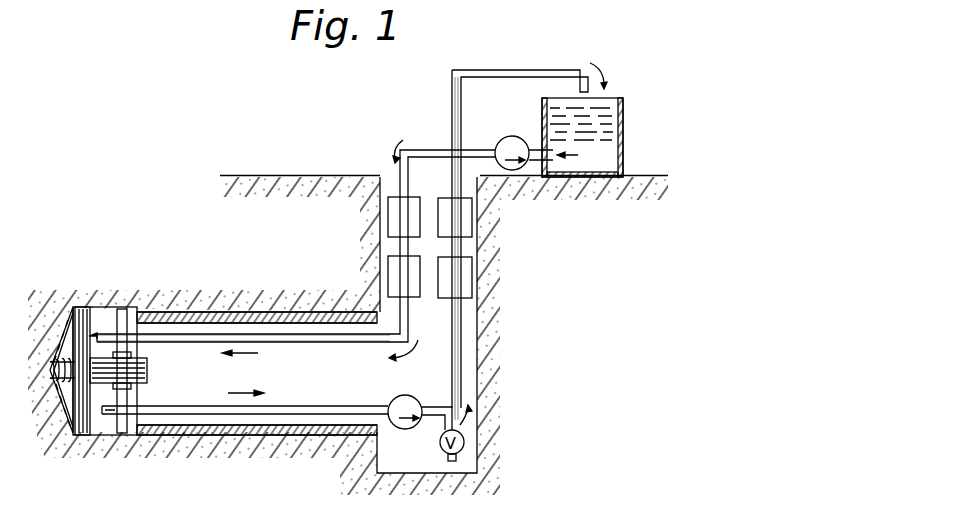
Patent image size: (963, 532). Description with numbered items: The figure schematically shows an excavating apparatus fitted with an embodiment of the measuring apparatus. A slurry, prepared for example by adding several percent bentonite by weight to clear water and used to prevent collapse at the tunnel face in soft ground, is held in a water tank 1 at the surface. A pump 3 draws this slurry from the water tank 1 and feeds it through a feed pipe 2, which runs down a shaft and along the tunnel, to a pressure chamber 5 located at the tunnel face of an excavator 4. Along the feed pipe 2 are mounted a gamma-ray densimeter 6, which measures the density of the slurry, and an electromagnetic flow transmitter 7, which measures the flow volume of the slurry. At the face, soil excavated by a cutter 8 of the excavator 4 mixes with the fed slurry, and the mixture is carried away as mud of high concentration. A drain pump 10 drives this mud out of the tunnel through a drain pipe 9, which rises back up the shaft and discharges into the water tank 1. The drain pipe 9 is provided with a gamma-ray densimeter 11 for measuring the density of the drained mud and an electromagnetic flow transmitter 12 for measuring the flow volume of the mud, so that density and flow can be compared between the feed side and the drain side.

The water tank 1 is at (624, 133).
The feed pipe 2 is at (432, 150).
The pump 3 is at (504, 137).
The excavator 4 is at (106, 438).
The pressure chamber 5 is at (104, 318).
The gamma-ray densimeter 6 is at (390, 272).
The electromagnetic flow transmitter 7 is at (388, 213).
The cutter 8 is at (64, 396).
The drain pipe 9 is at (514, 71).
The drain pump 10 is at (422, 397).
The gamma-ray densimeter 11 is at (468, 212).
The electromagnetic flow transmitter 12 is at (462, 277).